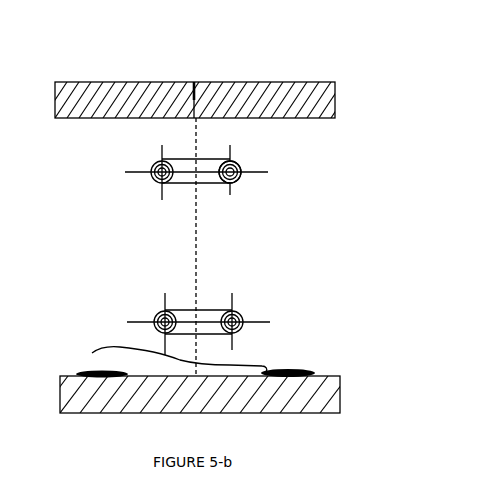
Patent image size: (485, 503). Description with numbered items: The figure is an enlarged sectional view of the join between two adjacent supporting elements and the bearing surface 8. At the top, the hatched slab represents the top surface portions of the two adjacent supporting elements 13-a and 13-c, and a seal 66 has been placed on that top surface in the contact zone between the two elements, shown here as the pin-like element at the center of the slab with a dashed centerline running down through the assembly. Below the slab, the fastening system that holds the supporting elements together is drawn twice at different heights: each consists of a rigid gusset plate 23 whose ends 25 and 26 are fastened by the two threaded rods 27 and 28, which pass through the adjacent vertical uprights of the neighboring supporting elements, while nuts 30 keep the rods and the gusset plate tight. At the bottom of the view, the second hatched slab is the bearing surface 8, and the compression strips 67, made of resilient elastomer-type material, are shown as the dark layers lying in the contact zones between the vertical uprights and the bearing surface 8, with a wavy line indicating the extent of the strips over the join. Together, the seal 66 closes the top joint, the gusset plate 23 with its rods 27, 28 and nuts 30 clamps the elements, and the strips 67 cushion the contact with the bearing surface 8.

The supporting element top surface portion 13-c is at (120, 103).
The supporting element top surface portion 13-a is at (293, 90).
The seal 66 is at (194, 82).
The rigid gusset plate 23 is at (205, 184).
The gusset plate end 25 is at (151, 182).
The threaded rod 27 is at (163, 200).
The nut 30 is at (238, 165).
The gusset plate end 26 is at (240, 180).
The threaded rod 28 is at (231, 184).
The compression strip 67 is at (110, 374).
The bearing surface 8 is at (280, 388).